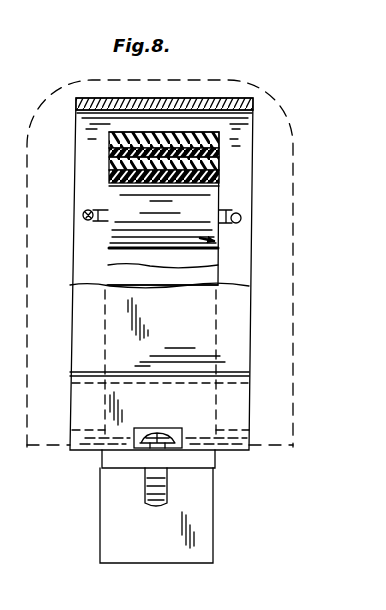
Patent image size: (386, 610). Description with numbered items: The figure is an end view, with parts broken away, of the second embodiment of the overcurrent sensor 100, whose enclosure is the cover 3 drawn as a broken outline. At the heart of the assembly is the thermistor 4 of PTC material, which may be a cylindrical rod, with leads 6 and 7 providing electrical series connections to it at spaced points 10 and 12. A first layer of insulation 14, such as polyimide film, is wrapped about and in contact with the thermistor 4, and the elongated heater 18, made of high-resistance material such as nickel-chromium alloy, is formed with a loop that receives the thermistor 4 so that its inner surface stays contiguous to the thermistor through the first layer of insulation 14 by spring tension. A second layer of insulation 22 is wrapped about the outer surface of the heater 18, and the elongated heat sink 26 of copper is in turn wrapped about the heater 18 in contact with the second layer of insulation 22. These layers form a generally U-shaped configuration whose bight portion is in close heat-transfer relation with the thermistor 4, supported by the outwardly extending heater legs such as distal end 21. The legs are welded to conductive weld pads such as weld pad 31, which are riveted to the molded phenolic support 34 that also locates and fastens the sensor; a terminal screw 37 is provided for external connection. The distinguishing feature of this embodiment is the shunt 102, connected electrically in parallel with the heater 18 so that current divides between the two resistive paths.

The overcurrent sensor 100 is at (36, 104).
The cover 3 is at (279, 110).
The shunt 102 is at (108, 103).
The heat sink 26 is at (118, 141).
The second layer of insulation 22 is at (110, 153).
The heater 18 is at (218, 162).
The first layer of insulation 14 is at (220, 170).
The spaced point 12 is at (227, 223).
The thermistor 4 is at (208, 240).
The lead 7 is at (86, 211).
The lead 6 is at (240, 214).
The spaced point 10 is at (98, 218).
The free distal end 21 is at (216, 432).
The weld pad 31 is at (110, 460).
The support 34 is at (205, 497).
The terminal screw 37 is at (156, 506).